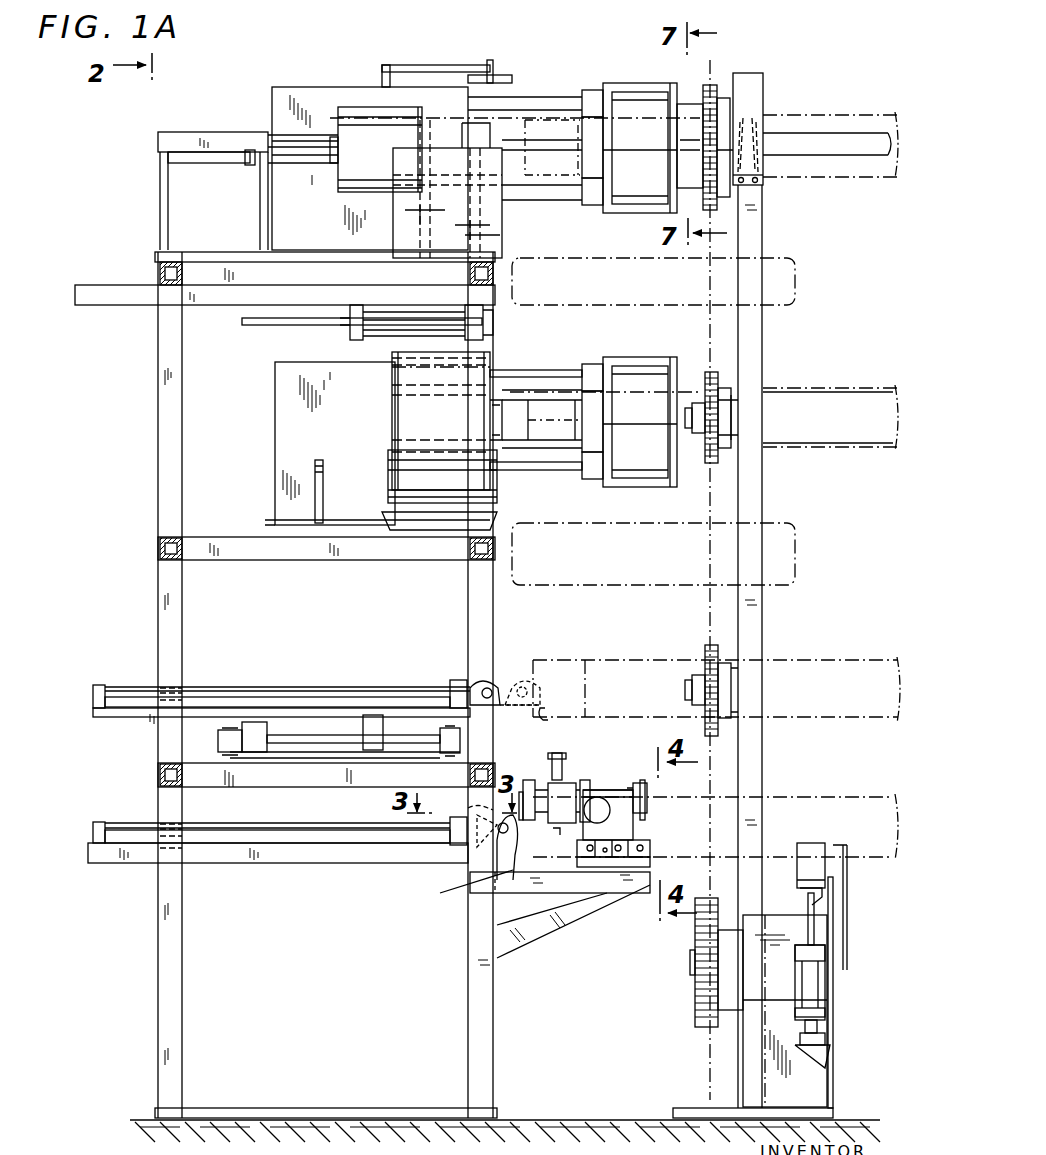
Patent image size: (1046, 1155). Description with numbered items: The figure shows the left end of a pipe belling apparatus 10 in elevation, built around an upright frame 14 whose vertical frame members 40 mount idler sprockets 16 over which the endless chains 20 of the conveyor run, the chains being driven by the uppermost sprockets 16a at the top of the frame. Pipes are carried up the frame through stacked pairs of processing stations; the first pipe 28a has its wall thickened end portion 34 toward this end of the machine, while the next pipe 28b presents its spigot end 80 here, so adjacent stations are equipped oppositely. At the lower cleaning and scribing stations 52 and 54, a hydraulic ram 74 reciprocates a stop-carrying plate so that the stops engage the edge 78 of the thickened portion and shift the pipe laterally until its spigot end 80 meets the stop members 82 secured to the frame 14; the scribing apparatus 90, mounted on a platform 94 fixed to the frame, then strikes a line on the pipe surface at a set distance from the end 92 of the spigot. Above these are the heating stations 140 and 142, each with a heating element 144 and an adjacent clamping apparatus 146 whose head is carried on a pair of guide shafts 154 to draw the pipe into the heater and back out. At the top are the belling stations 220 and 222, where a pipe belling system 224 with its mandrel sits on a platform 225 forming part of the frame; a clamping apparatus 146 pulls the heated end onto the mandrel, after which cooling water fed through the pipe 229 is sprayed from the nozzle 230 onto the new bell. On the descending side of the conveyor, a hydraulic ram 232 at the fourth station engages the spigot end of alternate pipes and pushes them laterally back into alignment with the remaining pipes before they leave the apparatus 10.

The pipe belling apparatus 10 is at (102, 158).
The frame 14 is at (752, 635).
The sprockets 16 is at (708, 463).
The uppermost sprockets 16a is at (712, 82).
The endless chains 20 is at (708, 337).
The first pipe 28a is at (663, 662).
The next pipe 28b is at (860, 795).
The wall thickened end portion 34 is at (588, 670).
The frame members 40 is at (752, 345).
The cleaning and scribing station 52 is at (72, 841).
The cleaning and scribing station 54 is at (77, 697).
The hydraulic ram 74 is at (318, 752).
The edge 78 is at (556, 782).
The spigot end 80 is at (525, 792).
The stop members 82 is at (495, 853).
The scribing apparatus 90 is at (623, 755).
The end of spigot 92 is at (510, 877).
The platform 94 is at (540, 888).
The heating station 140 is at (130, 550).
The heating station 142 is at (126, 385).
The heating element 144 is at (412, 370).
The clamping apparatus 146 is at (638, 78).
The guide shafts 154 is at (555, 377).
The belling station 220 is at (100, 278).
The belling station 222 is at (258, 100).
The pipe belling system 224 is at (392, 54).
The platform 225 is at (462, 122).
The pipe 229 is at (453, 48).
The nozzle 230 is at (507, 78).
The hydraulic ram 232 is at (377, 340).